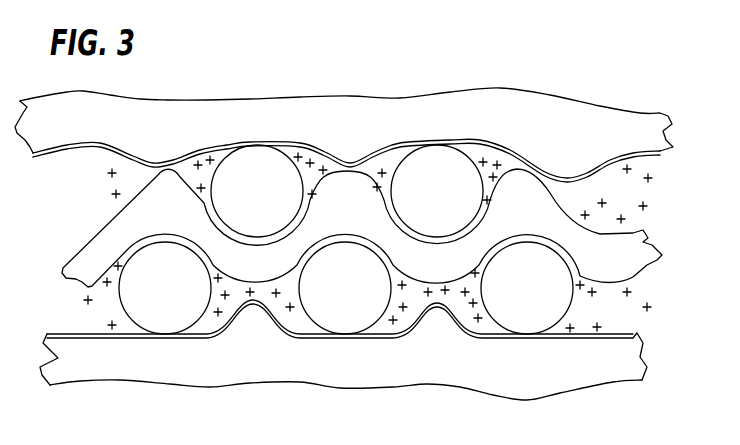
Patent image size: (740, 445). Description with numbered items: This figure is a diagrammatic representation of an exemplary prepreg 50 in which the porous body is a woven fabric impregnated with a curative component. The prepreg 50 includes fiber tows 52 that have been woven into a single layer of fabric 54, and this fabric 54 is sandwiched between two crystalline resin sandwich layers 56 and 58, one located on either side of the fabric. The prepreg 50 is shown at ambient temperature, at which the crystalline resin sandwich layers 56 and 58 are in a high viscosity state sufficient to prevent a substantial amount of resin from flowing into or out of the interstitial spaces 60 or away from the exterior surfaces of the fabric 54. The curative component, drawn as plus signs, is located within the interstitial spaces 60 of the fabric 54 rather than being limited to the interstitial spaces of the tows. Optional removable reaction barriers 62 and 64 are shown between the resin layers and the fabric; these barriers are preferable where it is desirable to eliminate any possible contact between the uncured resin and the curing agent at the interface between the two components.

The prepreg 50 is at (62, 297).
The fiber tows 52 is at (258, 160).
The fabric 54 is at (78, 209).
The crystalline resin sandwich layer 56 is at (205, 118).
The crystalline resin sandwich layer 58 is at (495, 385).
The interstitial spaces 60 is at (306, 173).
The removable reaction barrier 62 is at (648, 157).
The removable reaction barrier 64 is at (625, 330).